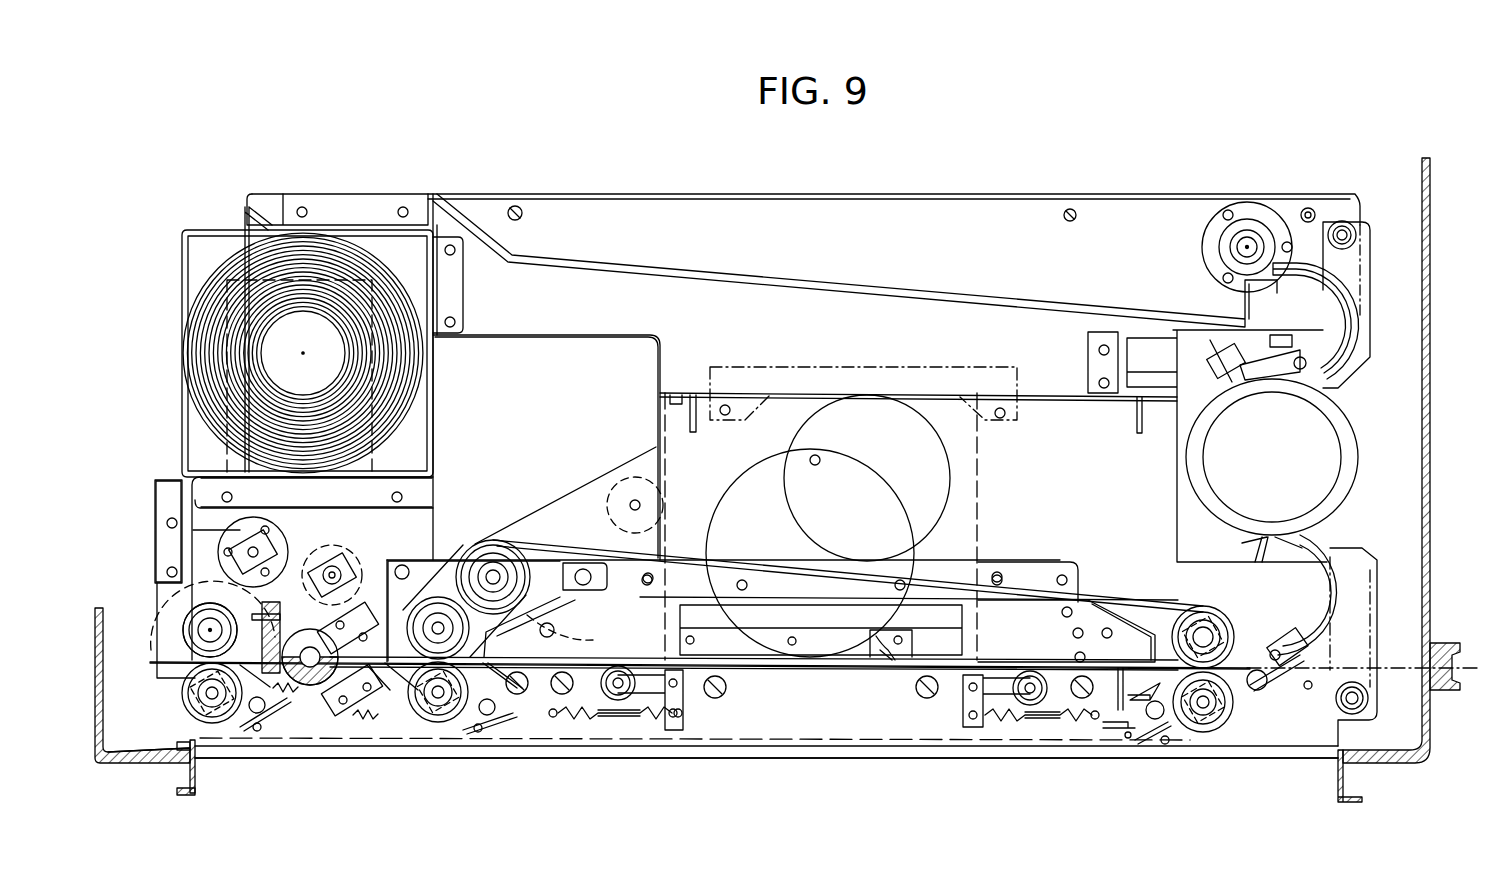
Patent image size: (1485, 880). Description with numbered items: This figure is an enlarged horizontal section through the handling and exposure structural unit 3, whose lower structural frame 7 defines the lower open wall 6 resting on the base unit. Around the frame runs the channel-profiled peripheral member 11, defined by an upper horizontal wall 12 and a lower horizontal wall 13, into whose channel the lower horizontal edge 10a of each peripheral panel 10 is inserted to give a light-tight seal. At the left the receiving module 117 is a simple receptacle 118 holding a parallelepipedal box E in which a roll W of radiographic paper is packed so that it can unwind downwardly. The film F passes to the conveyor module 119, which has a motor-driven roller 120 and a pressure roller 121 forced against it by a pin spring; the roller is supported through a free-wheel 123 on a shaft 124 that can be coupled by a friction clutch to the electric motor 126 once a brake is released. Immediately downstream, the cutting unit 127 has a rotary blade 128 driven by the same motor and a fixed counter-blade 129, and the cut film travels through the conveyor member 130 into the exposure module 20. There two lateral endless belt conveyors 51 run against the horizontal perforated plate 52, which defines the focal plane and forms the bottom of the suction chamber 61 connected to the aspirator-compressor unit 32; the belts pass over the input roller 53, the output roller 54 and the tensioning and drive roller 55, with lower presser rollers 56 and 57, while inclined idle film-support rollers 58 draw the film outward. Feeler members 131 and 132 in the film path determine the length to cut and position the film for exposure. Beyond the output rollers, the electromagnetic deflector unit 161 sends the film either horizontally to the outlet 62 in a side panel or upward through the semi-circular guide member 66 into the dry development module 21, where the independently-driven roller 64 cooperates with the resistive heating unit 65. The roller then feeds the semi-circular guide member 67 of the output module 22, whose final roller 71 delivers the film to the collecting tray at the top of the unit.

The handling and exposure structural unit 3 is at (1397, 228).
The lower open wall 6 is at (676, 768).
The lower structural frame 7 is at (892, 290).
The peripheral panel 10 is at (104, 630).
The lower horizontal edge 10a is at (180, 768).
The channel-profiled peripheral member 11 is at (196, 788).
The upper horizontal wall 12 is at (180, 742).
The lower horizontal wall 13 is at (184, 796).
The exposure module 20 is at (792, 690).
The dry development module 21 is at (1378, 362).
The output module 22 is at (1290, 212).
The aspirator-compressor unit 32 is at (655, 470).
The endless belt conveyor 51 is at (680, 553).
The horizontal perforated plate 52 is at (738, 678).
The input roller 53 is at (440, 598).
The output roller 54 is at (1192, 612).
The tensioning and drive roller 55 is at (494, 542).
The lower presser roller 56 is at (442, 722).
The lower presser roller 57 is at (1195, 722).
The idle film-support roller 58 is at (620, 702).
The suction chamber 61 is at (1025, 636).
The outlet 62 is at (1440, 665).
The independently-driven roller 64 is at (1325, 465).
The resistive heating unit 65 is at (1265, 380).
The semi-circular guide member 66 is at (1364, 592).
The semi-circular guide member 67 is at (1363, 320).
The final roller 71 is at (1225, 247).
The receiving module 117 is at (443, 352).
The receptacle 118 is at (252, 214).
The conveyor module 119 is at (148, 534).
The motor-driven roller 120 is at (206, 604).
The pressure roller 121 is at (218, 705).
The free-wheel 123 is at (190, 634).
The shaft 124 is at (208, 628).
The electric motor 126 is at (908, 508).
The cutting unit 127 is at (294, 624).
The rotary blade 128 is at (348, 686).
The fixed counter-blade 129 is at (296, 684).
The conveyor member 130 is at (403, 592).
The feeler member 131 is at (888, 665).
The feeler member 132 is at (1122, 712).
The electromagnetic deflector unit 161 is at (1268, 700).
The parallelepipedal box E is at (182, 240).
The film F is at (182, 483).
The roll W is at (310, 250).